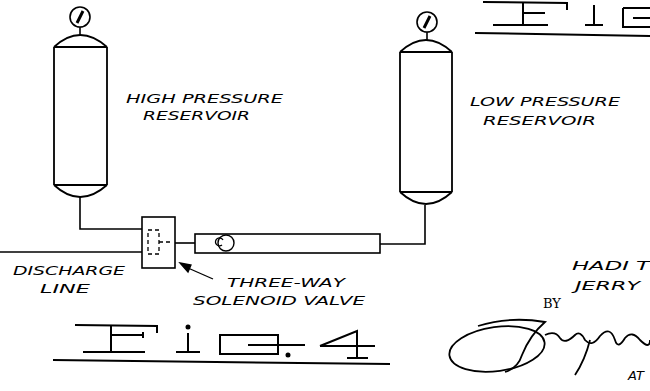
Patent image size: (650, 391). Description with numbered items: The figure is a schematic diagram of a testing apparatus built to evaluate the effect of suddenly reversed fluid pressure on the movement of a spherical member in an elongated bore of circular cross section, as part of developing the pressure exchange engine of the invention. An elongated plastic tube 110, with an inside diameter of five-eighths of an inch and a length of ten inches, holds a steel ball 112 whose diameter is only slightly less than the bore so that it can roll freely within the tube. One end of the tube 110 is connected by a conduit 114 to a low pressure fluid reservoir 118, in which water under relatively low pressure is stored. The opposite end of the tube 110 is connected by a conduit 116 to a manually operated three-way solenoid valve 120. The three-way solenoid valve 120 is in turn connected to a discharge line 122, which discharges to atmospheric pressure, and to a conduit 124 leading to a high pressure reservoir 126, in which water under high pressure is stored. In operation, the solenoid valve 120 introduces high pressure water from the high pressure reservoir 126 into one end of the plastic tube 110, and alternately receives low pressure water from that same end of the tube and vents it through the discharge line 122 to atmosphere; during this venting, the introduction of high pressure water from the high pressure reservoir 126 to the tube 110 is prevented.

The elongated plastic tube 110 is at (282, 232).
The steel ball 112 is at (221, 233).
The conduit 114 is at (405, 246).
The conduit 116 is at (190, 233).
The low pressure fluid reservoir 118 is at (435, 108).
The three-way solenoid valve 120 is at (155, 222).
The discharge line 122 is at (10, 252).
The conduit 124 is at (75, 212).
The high pressure reservoir 126 is at (93, 95).